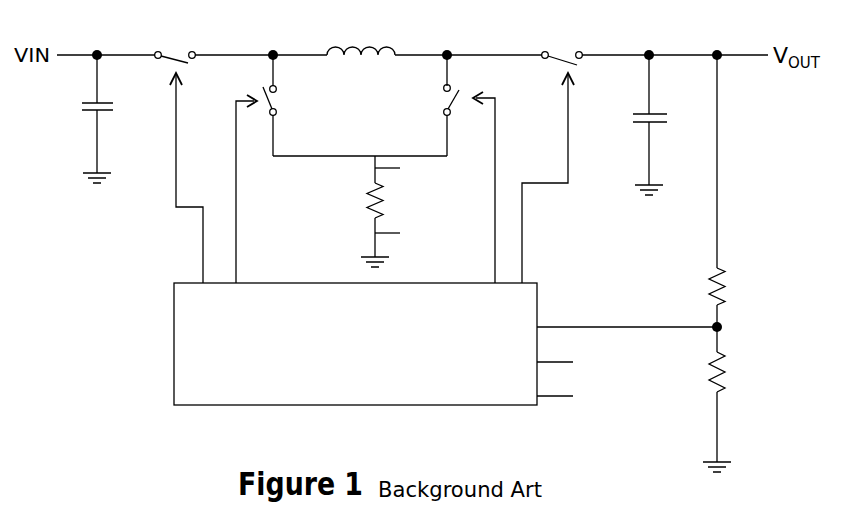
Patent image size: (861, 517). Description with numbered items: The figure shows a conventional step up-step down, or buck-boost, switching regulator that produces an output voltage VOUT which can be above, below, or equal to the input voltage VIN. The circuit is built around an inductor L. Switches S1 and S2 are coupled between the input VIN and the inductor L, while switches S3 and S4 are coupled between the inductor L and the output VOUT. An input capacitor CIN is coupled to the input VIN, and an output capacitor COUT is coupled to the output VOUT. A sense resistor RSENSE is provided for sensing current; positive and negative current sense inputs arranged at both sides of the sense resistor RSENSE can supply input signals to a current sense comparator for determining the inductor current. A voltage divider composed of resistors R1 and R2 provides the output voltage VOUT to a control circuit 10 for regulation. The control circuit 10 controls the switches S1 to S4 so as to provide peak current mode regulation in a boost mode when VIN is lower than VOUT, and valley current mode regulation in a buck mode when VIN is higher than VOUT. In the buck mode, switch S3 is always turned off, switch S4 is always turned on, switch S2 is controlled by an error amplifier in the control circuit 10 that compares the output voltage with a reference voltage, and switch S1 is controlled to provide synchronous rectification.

The control circuit 10 is at (537, 308).
The switch S1 is at (179, 150).
The switch S2 is at (277, 169).
The switch S3 is at (450, 169).
The switch S4 is at (552, 150).
The inductor L is at (361, 66).
The input capacitor CIN is at (78, 119).
The output capacitor COUT is at (621, 125).
The sense resistor RSENSE is at (411, 211).
The resistor R1 is at (736, 286).
The resistor R2 is at (736, 372).